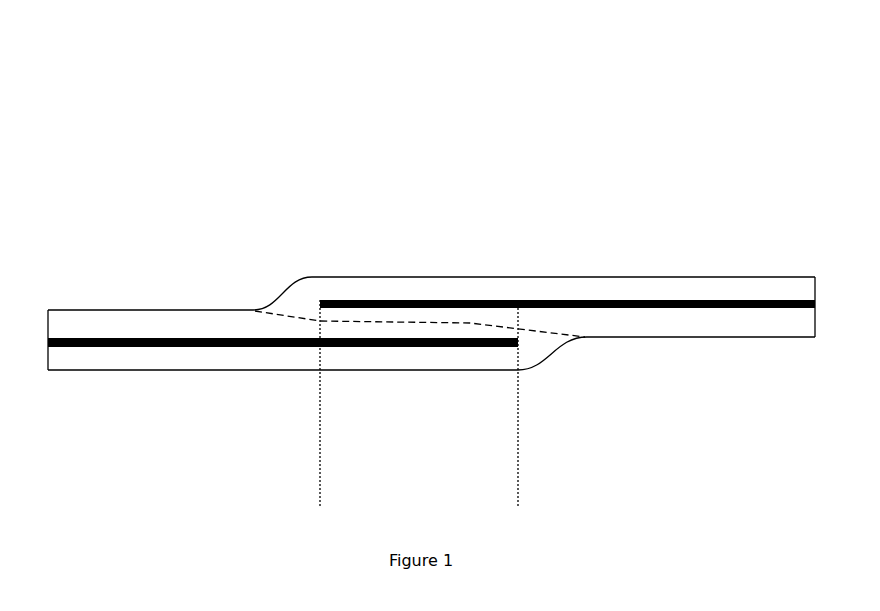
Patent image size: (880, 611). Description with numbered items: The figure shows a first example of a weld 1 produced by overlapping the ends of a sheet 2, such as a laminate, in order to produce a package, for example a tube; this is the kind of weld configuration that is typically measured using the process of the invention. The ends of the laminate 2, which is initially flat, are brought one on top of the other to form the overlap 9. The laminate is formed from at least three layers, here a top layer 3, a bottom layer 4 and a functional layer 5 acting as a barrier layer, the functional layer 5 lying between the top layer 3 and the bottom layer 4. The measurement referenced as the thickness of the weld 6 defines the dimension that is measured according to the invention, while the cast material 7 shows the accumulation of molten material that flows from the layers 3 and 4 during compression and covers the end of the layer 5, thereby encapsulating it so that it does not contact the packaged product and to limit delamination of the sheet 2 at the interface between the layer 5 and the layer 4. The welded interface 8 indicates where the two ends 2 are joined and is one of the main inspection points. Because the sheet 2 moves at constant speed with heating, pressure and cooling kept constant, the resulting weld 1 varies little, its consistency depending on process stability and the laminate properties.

The weld 1 is at (228, 143).
The ends of the sheet 2 is at (112, 307).
The top layer 3 is at (182, 325).
The bottom layer 4 is at (180, 358).
The functional layer 5 is at (118, 345).
The thickness of the weld 6 is at (423, 418).
The cast material 7 is at (295, 302).
The welded interface 8 is at (473, 325).
The overlap 9 is at (516, 490).